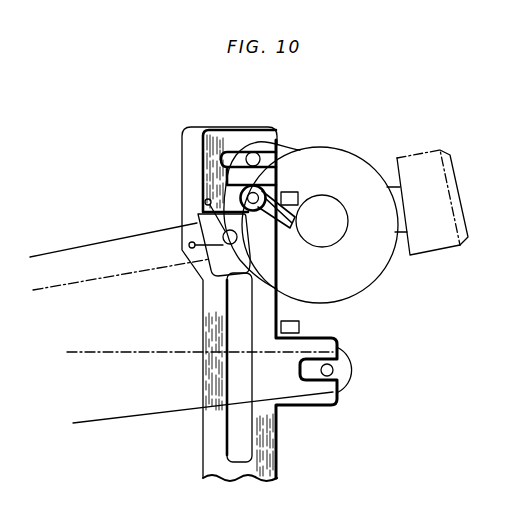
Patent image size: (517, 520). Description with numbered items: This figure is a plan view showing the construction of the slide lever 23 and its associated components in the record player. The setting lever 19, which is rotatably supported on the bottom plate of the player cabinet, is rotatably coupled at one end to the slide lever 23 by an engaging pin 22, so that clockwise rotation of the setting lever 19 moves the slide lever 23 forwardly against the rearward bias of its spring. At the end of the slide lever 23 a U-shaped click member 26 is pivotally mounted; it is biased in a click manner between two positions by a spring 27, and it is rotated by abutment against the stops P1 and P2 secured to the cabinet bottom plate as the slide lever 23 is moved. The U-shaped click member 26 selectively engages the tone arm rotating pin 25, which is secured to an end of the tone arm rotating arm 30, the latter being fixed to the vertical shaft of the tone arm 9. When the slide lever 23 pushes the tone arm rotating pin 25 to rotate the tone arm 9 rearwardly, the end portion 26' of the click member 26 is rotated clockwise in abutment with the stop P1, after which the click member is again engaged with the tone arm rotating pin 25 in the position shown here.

The tone arm 9 is at (67, 249).
The setting lever 19 is at (135, 398).
The engaging pin 22 is at (333, 369).
The slide lever 23 is at (212, 442).
The tone arm rotating pin 25 is at (262, 160).
The U-shaped click member 26 is at (204, 171).
The end portion of the U-shaped click plate 26' is at (287, 235).
The spring 27 is at (200, 267).
The tone arm rotating arm 30 is at (292, 180).
The stop P1 is at (299, 194).
The stop P2 is at (299, 326).